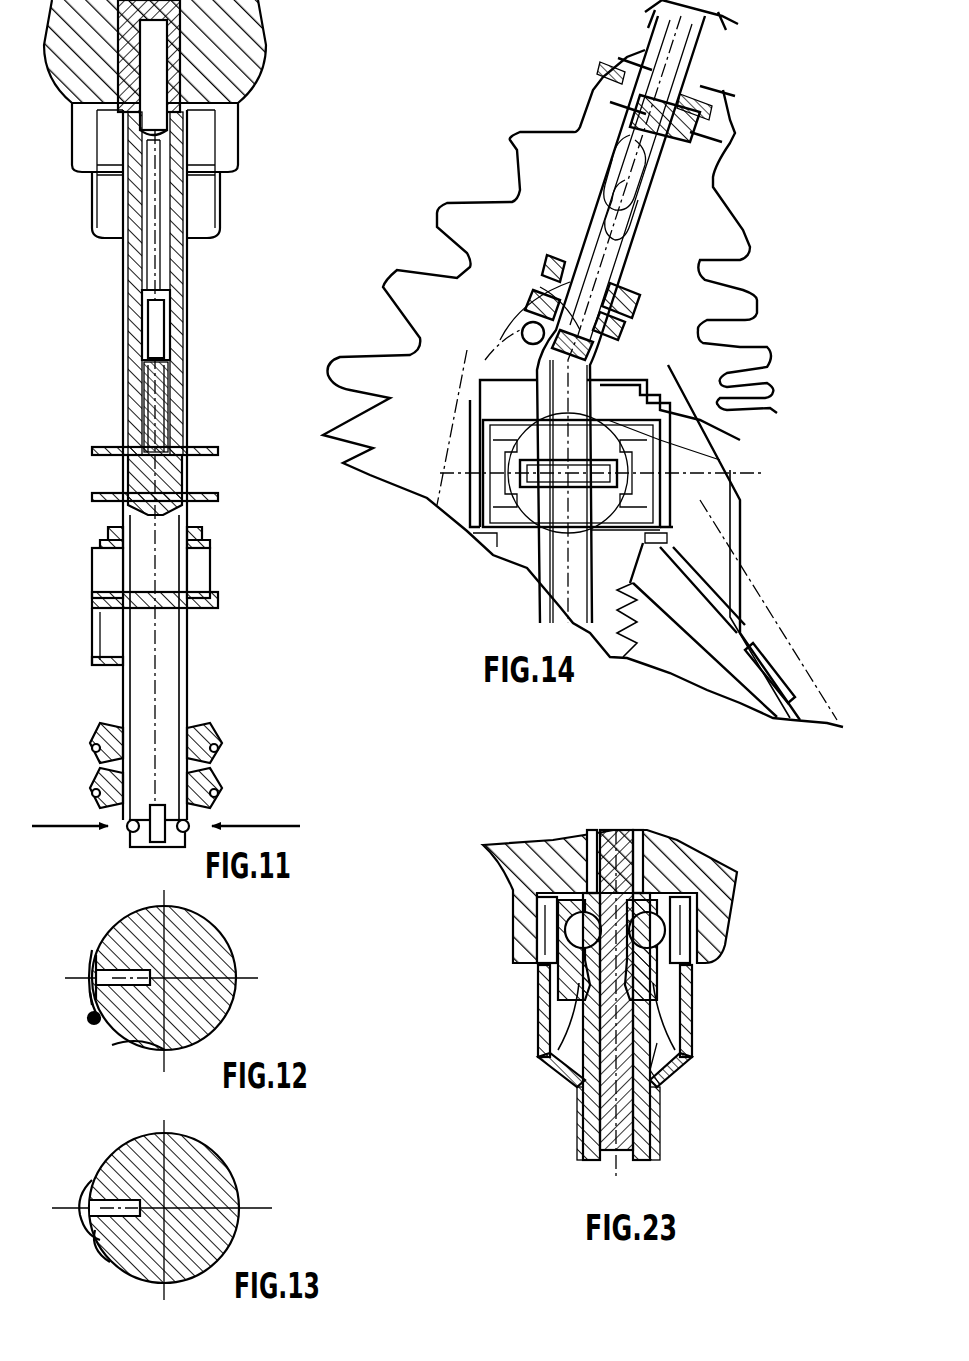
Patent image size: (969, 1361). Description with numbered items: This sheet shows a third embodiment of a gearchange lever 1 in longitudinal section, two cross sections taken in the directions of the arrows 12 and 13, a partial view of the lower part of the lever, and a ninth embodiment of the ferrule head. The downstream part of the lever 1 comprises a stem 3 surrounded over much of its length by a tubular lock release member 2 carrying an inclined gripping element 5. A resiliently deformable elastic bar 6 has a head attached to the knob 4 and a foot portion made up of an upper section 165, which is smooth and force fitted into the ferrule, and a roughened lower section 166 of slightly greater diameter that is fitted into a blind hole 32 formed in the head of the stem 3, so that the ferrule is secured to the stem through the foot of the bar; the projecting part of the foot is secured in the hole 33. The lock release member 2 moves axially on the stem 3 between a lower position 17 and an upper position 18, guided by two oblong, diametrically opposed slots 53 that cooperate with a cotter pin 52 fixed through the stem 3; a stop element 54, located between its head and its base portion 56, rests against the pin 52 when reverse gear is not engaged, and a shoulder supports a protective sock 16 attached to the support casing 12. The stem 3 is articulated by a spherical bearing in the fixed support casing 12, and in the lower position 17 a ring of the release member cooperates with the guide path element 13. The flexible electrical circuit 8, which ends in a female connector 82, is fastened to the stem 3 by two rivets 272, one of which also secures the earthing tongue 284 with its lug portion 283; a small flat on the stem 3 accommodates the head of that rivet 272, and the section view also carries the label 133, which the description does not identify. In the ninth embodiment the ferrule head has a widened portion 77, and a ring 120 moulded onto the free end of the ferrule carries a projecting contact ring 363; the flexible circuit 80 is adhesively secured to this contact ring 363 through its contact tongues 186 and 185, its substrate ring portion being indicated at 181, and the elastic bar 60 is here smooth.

In FIG. 11, the gear lever 1 is at (128, 250).
In FIG. 14, the gear lever 1 is at (613, 115).
In FIG. 11, the lock release member 2 is at (186, 304).
In FIG. 14, the lock release member 2 is at (587, 232).
In FIG. 23, the lock release member 2 is at (576, 1132).
In FIG. 12, the stem 3 is at (222, 940).
In FIG. 13, the stem 3 is at (230, 1175).
In FIG. 11, the knob 4 is at (245, 52).
In FIG. 23, the knob 4 is at (700, 955).
In FIG. 11, the gripping element 5 is at (212, 235).
In FIG. 11, the elastic bar 6 is at (168, 250).
In FIG. 12, the flexible circuit 8 is at (130, 1050).
In FIG. 14, the flexible circuit 8 is at (752, 548).
In FIG. 11, the support casing 12 is at (69, 800).
In FIG. 14, the support casing 12 is at (446, 444).
In FIG. 11, the guide path element 13 is at (256, 800).
In FIG. 14, the protective sock 16 is at (547, 128).
In FIG. 11, the lower position 17 is at (224, 786).
In FIG. 11, the upper position 18 is at (213, 718).
In FIG. 11, the blind hole 32 is at (186, 480).
In FIG. 11, the hole 33 is at (132, 840).
In FIG. 11, the pin 52 is at (220, 602).
In FIG. 11, the oblong slots 53 is at (92, 638).
In FIG. 11, the stop element 54 is at (204, 580).
In FIG. 11, the base portion 56 is at (100, 780).
In FIG. 23, the elastic bar 60 is at (645, 1145).
In FIG. 23, the widened portion 77 is at (540, 1005).
In FIG. 23, the flexible electrical circuit 80 is at (660, 1050).
In FIG. 14, the connector 82 is at (773, 663).
In FIG. 23, the ring 120 is at (547, 1062).
In FIG. 12, the slot 133 is at (95, 958).
In FIG. 11, the upper section 165 is at (166, 336).
In FIG. 11, the lower section 166 is at (160, 396).
In FIG. 23, the substrate ring portion 181 is at (700, 872).
In FIG. 23, the contact tongue 185 is at (660, 1010).
In FIG. 23, the contact tongue 186 is at (535, 905).
In FIG. 12, the rivets 272 is at (92, 975).
In FIG. 13, the rivets 272 is at (80, 1195).
In FIG. 14, the lug portion 283 is at (507, 282).
In FIG. 12, the earthing tongue 284 is at (92, 962).
In FIG. 14, the earthing tongue 284 is at (660, 420).
In FIG. 23, the contact ring 363 is at (660, 930).